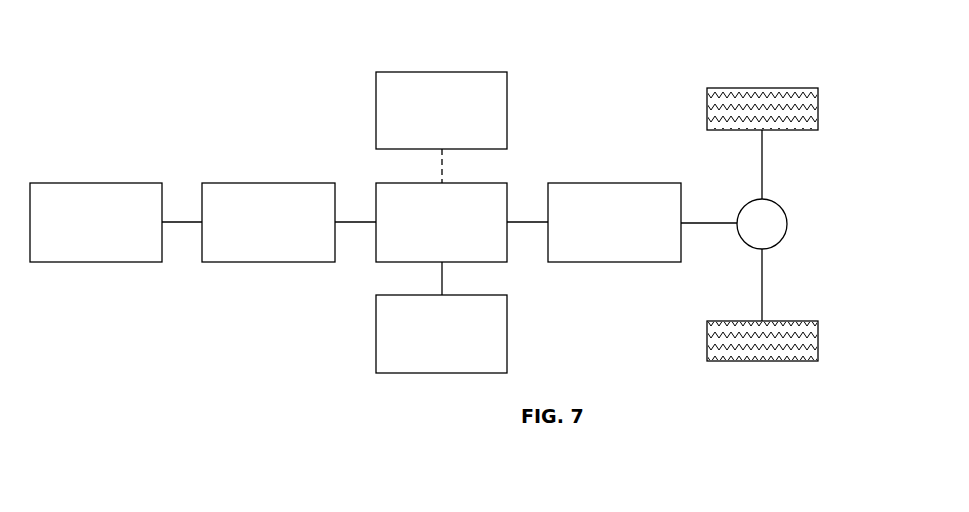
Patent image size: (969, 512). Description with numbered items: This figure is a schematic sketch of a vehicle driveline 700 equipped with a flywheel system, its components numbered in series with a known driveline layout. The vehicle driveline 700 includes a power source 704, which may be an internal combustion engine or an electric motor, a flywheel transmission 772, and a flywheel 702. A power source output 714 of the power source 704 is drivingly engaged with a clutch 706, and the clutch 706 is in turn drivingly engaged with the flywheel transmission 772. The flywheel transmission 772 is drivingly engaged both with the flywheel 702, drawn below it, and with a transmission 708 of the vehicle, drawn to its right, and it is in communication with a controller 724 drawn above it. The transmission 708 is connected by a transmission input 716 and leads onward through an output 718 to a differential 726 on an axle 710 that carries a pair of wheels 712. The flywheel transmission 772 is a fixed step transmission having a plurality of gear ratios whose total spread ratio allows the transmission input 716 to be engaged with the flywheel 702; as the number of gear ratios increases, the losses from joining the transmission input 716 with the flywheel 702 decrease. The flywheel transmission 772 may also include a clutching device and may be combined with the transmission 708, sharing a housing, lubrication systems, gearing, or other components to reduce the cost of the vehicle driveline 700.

The vehicle driveline 700 is at (121, 82).
The flywheel 702 is at (442, 373).
The power source 704 is at (96, 183).
The clutch 706 is at (270, 183).
The transmission 708 is at (615, 183).
The axle 710 is at (763, 285).
The wheels 712 is at (760, 88).
The power source output 714 is at (181, 222).
The transmission input 716 is at (527, 225).
The drive shaft 718 is at (696, 226).
The controller 724 is at (441, 72).
The differential 726 is at (721, 221).
The flywheel transmission 772 is at (376, 262).